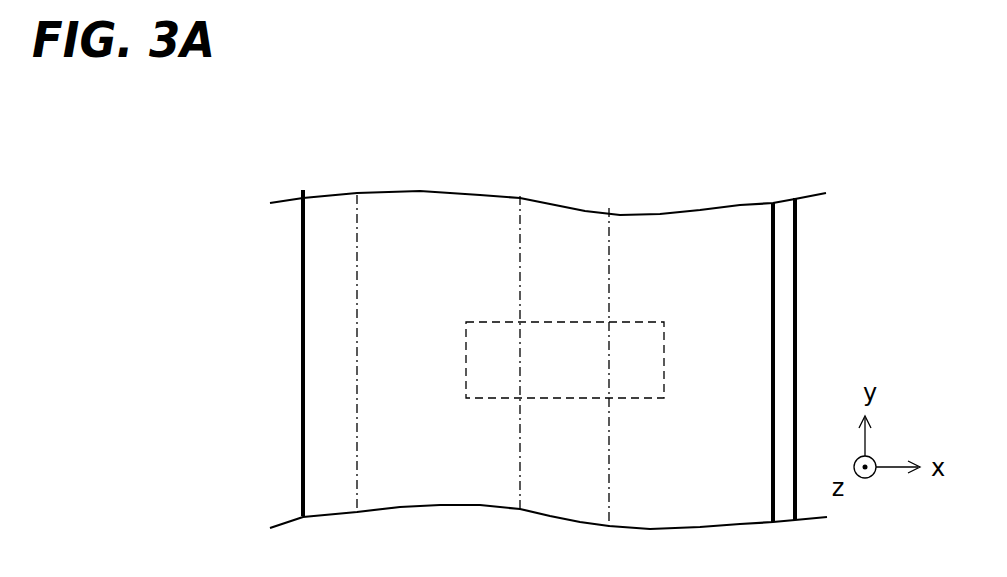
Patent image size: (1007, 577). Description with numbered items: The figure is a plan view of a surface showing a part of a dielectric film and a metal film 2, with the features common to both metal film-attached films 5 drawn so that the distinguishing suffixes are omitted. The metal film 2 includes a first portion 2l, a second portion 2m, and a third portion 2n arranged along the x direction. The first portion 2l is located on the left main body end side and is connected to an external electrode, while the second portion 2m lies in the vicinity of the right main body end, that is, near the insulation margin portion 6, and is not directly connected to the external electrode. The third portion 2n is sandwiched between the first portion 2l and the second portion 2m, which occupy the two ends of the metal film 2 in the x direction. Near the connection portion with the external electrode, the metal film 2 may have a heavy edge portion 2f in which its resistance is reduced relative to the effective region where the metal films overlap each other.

The metal film 2 is at (718, 81).
The first portion 2l is at (520, 166).
The third portion 2n is at (519, 144).
The second portion 2m is at (610, 166).
The heavy edge portion 2f is at (334, 377).
The metal film-attached film 5 is at (801, 162).
The insulation margin portion 6 is at (783, 366).